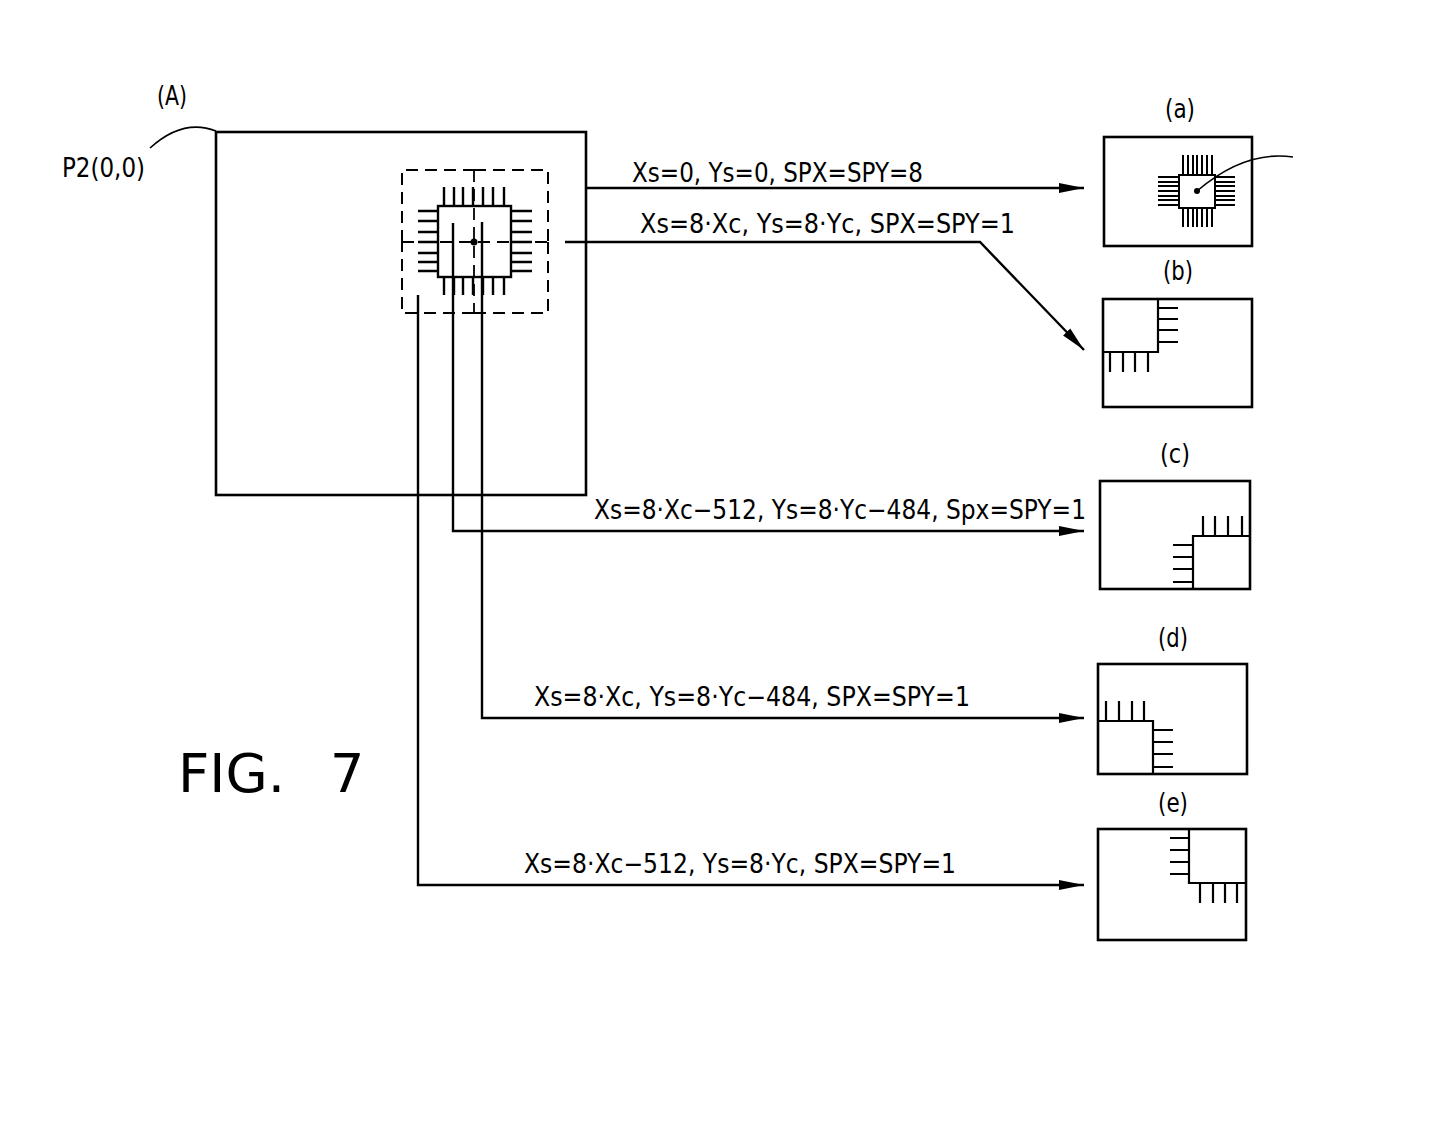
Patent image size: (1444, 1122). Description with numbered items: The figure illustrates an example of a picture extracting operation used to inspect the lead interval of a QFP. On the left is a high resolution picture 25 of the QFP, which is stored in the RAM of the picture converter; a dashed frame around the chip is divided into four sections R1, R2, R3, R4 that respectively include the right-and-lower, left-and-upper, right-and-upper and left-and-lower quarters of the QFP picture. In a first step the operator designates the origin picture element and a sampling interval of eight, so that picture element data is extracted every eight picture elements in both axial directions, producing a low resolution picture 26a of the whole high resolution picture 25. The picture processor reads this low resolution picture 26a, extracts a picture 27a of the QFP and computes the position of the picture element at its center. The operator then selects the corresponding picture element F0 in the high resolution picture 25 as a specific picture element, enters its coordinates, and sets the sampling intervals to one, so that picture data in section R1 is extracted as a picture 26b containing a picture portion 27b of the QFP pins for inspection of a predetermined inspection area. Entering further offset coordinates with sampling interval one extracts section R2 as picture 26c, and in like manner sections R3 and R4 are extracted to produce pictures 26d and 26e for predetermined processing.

The high resolution picture 25 is at (592, 136).
The picture element F0 is at (474, 242).
The section R1 is at (548, 293).
The section R2 is at (442, 168).
The section R3 is at (513, 168).
The section R4 is at (407, 313).
The low resolution picture 26a is at (1223, 137).
The picture of the QFP 27a is at (1215, 208).
The picture 26b is at (1252, 299).
The picture portion of the QFP 27b is at (1145, 332).
The extracted picture 26c is at (1250, 502).
The picture 26d is at (1247, 670).
The picture 26e is at (1246, 860).